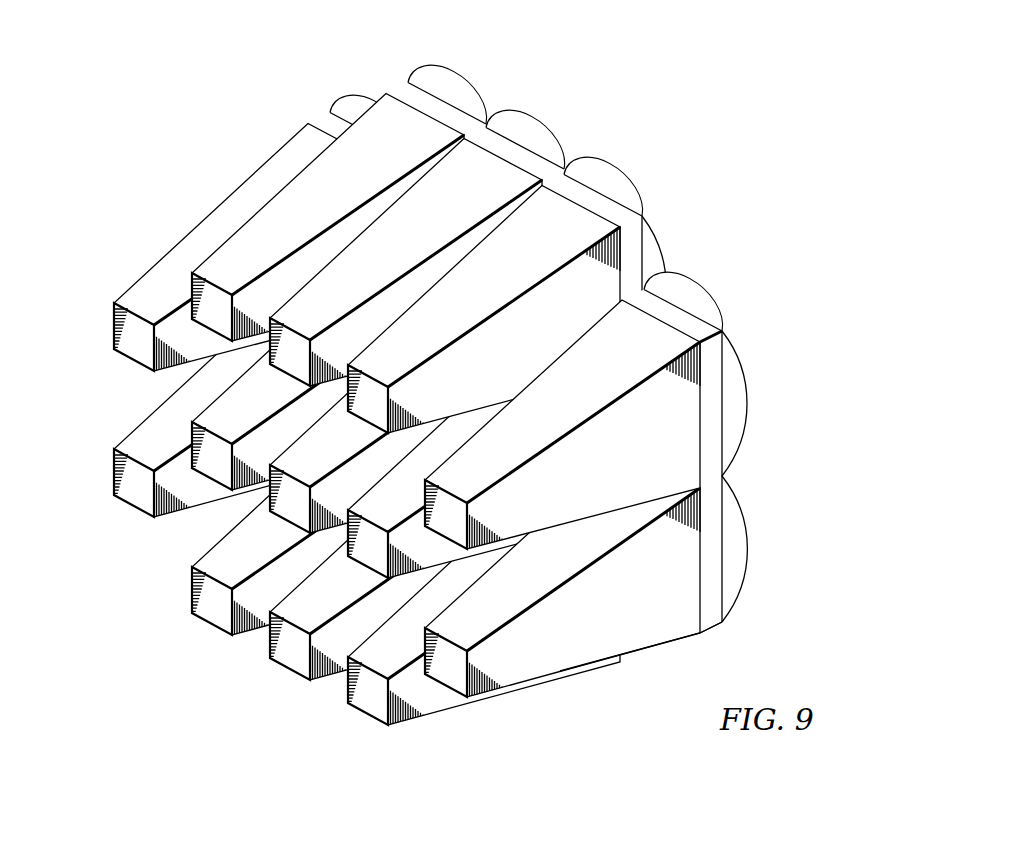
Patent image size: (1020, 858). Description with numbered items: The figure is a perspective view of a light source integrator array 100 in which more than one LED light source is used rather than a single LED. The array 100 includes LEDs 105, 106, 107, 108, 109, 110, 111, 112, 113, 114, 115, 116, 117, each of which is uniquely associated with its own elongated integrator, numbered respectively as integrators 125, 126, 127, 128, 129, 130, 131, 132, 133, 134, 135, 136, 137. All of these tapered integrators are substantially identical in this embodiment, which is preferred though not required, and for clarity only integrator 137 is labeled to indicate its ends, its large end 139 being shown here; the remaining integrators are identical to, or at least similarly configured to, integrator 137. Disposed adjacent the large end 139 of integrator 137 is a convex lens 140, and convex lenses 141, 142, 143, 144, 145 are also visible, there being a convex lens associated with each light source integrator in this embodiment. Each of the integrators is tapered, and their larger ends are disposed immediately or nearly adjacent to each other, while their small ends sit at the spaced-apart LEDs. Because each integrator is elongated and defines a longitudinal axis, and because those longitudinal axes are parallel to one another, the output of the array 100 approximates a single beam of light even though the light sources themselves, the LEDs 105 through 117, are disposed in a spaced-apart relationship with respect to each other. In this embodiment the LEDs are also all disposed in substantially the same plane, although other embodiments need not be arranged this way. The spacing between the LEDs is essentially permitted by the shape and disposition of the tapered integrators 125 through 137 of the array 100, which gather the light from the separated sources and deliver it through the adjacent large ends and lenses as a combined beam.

The light source integrator array 100 is at (428, 408).
The LED 105 is at (127, 345).
The LED 106 is at (132, 495).
The LED 107 is at (190, 290).
The LED 108 is at (231, 438).
The LED 109 is at (210, 615).
The LED 110 is at (298, 350).
The LED 111 is at (298, 492).
The LED 112 is at (290, 660).
The LED 113 is at (373, 393).
The LED 114 is at (373, 538).
The LED 115 is at (363, 705).
The LED 116 is at (445, 500).
The LED 117 is at (443, 683).
The tapered integrator 125 is at (224, 253).
The tapered integrator 126 is at (212, 403).
The tapered integrator 127 is at (279, 218).
The tapered integrator 128 is at (262, 367).
The tapered integrator 129 is at (305, 546).
The tapered integrator 130 is at (406, 263).
The tapered integrator 131 is at (352, 415).
The tapered integrator 132 is at (382, 592).
The tapered integrator 133 is at (484, 310).
The tapered integrator 134 is at (484, 539).
The tapered integrator 135 is at (461, 632).
The tapered integrator 136 is at (562, 424).
The tapered integrator 137 is at (562, 606).
The large end 139 is at (628, 657).
The convex lens 140 is at (748, 540).
The convex lens 141 is at (355, 93).
The convex lens 142 is at (435, 65).
The convex lens 143 is at (512, 111).
The convex lens 144 is at (590, 157).
The convex lens 145 is at (670, 274).